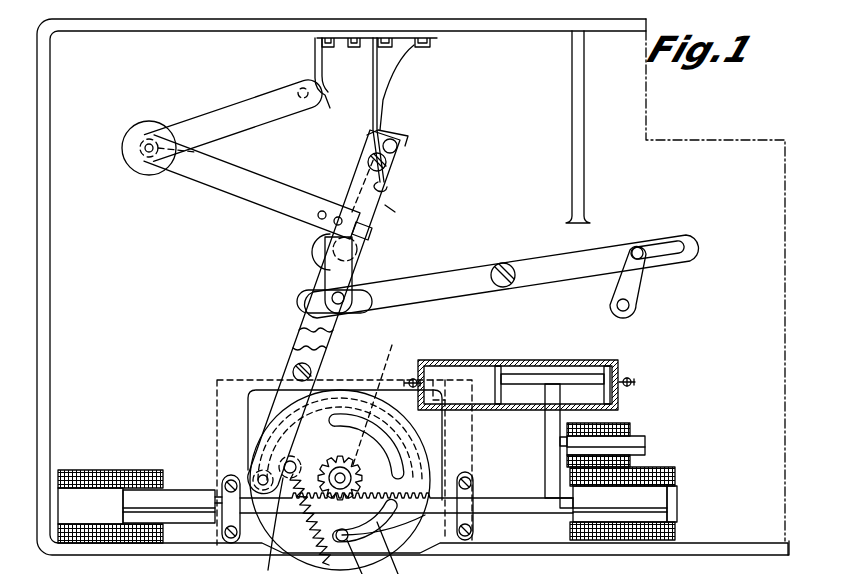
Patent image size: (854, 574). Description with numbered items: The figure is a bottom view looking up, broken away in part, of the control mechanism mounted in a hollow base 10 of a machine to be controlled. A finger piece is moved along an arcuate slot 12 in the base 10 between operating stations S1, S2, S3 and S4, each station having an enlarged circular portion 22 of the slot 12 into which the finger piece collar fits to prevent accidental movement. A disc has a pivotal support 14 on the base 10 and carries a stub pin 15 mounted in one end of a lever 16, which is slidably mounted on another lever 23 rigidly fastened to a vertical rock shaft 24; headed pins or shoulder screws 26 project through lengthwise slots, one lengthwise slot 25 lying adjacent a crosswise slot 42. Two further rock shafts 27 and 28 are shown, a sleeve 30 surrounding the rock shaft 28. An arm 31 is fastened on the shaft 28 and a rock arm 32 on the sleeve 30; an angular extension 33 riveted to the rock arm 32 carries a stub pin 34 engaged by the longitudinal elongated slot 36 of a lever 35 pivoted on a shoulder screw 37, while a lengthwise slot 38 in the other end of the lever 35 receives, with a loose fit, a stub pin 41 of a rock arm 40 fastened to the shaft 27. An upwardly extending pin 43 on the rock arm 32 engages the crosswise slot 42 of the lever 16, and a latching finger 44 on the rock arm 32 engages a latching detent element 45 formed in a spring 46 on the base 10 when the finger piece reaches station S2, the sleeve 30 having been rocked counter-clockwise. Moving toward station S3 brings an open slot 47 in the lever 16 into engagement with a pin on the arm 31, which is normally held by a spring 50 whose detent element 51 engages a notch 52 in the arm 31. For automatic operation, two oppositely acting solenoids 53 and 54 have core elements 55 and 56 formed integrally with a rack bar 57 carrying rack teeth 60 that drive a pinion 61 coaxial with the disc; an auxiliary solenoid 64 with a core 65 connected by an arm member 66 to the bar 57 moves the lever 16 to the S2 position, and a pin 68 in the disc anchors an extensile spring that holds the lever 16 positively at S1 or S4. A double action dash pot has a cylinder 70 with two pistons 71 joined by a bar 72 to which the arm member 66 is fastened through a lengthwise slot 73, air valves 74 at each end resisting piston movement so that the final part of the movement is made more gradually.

The hollow base 10 is at (413, 287).
The arcuate slot 12 is at (374, 405).
The pivotal support 14 is at (335, 468).
The stub pin 15 is at (300, 466).
The lever 16 is at (292, 352).
The enlarged circular portion 22 is at (262, 478).
The lever 23 is at (300, 340).
The rock shaft 24 is at (333, 248).
The lengthwise slot 25 is at (395, 200).
The headed pin 26 is at (370, 159).
The rock shaft 27 is at (624, 311).
The rock shaft 28 is at (149, 158).
The sleeve 30 is at (127, 170).
The arm 31 is at (266, 115).
The rock arm 32 is at (244, 204).
The angular extension 33 is at (328, 266).
The stub pin 34 is at (358, 290).
The lever 35 is at (568, 273).
The longitudinal elongated slot 36 is at (366, 306).
The shoulder screw 37 is at (506, 262).
The lengthwise slot 38 is at (678, 252).
The rock arm 40 is at (642, 296).
The stub pin 41 is at (638, 247).
The crosswise slot 42 is at (373, 232).
The pin 43 is at (350, 200).
The latching finger 44 is at (386, 218).
The latching detent element 45 is at (388, 182).
The spring 46 is at (378, 95).
The open slot 47 is at (378, 143).
The spring 50 is at (318, 62).
The detent element 51 is at (322, 92).
The notch 52 is at (296, 88).
The solenoid 53 is at (676, 468).
The solenoid 54 is at (108, 459).
The core element 55 is at (660, 500).
The core element 56 is at (170, 490).
The rack bar 57 is at (515, 482).
The rack teeth 60 is at (433, 508).
The pinion 61 is at (356, 470).
The auxiliary solenoid 64 is at (632, 426).
The core 65 is at (646, 441).
The arm member 66 is at (546, 447).
The pin 68 is at (297, 506).
The cylinder 70 is at (471, 362).
The piston 71 is at (499, 368).
The bar 72 is at (526, 380).
The lengthwise slot 73 is at (519, 409).
The air valve 74 is at (418, 380).
The operating station S1 is at (258, 478).
The operating station S2 is at (262, 422).
The operating station S3 is at (418, 382).
The operating station S4 is at (430, 470).